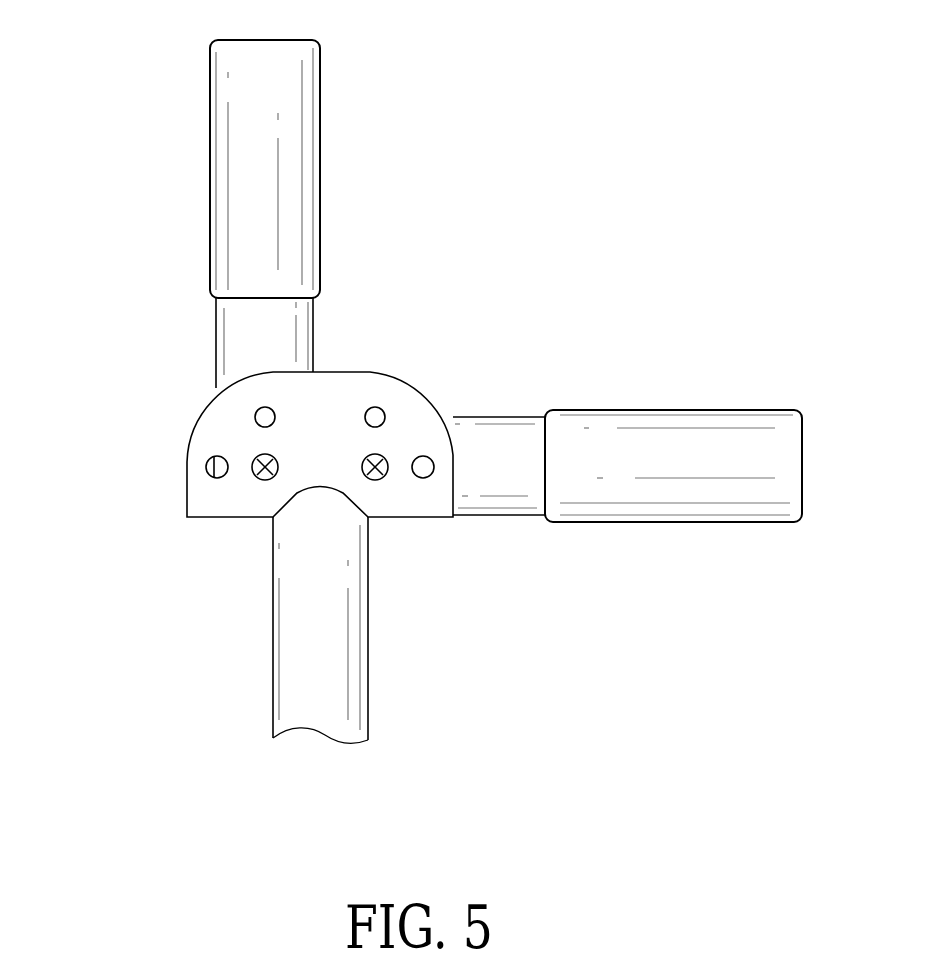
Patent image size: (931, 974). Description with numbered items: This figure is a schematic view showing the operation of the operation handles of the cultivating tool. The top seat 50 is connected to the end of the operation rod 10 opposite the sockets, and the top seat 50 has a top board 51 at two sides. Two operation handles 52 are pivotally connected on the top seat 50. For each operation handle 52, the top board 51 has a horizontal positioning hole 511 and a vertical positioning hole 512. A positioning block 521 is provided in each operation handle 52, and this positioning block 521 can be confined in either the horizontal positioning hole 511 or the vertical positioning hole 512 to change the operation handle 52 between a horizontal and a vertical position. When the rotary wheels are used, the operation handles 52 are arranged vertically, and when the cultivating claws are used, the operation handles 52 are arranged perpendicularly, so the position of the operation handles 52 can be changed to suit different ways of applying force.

The operation rod 10 is at (392, 626).
The top seat 50 is at (295, 396).
The top board 51 is at (196, 498).
The horizontal positioning hole 511 is at (206, 466).
The vertical positioning hole 512 is at (255, 420).
The positioning block 521 is at (258, 415).
The operation handle 52 is at (302, 144).